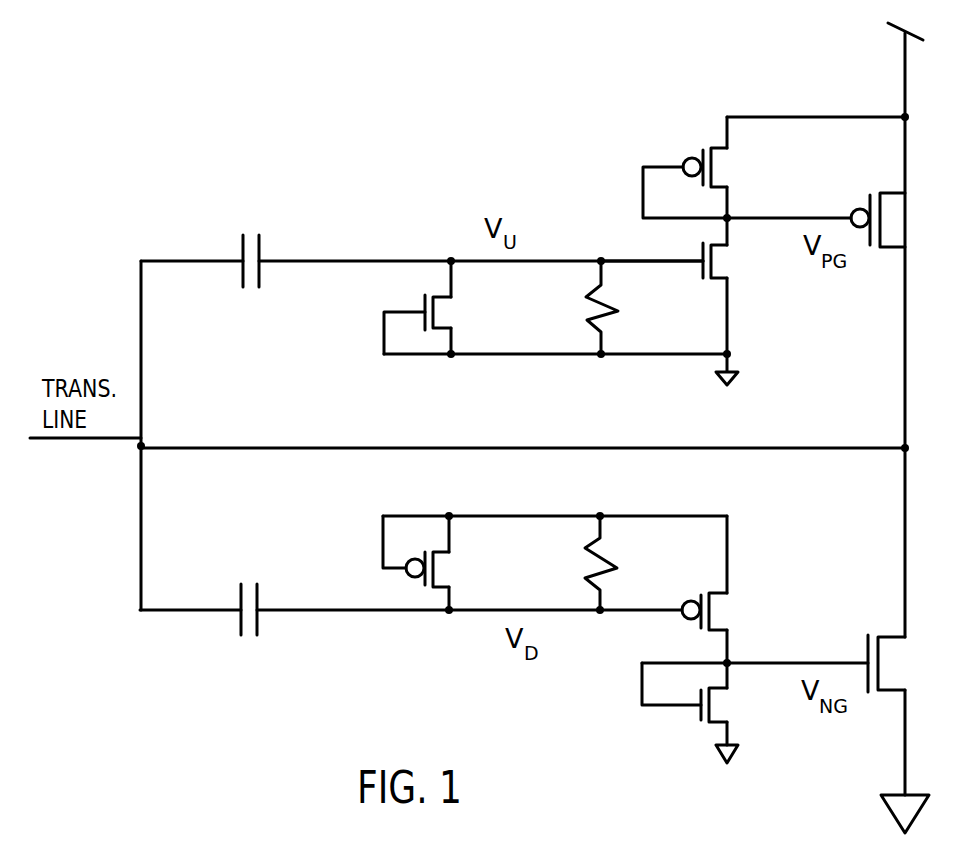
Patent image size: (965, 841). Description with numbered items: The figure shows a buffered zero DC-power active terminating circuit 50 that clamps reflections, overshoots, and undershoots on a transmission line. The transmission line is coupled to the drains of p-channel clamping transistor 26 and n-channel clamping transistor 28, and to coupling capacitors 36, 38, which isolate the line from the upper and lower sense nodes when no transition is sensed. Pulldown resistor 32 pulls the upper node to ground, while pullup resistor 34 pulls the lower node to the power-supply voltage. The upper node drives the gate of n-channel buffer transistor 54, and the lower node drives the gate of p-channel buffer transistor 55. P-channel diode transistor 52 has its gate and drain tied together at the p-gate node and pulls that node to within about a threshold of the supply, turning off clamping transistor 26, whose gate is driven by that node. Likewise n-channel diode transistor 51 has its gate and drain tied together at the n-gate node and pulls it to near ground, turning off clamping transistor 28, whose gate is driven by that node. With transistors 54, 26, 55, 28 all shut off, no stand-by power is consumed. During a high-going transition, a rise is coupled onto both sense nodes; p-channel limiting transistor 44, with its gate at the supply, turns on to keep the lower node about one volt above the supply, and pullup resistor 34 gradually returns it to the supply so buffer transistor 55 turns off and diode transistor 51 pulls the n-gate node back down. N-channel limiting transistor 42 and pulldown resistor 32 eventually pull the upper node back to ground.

The p-channel clamping transistor 26 is at (897, 218).
The n-channel clamping transistor 28 is at (892, 660).
The pulldown resistor 32 is at (578, 297).
The pullup resistor 34 is at (577, 549).
The coupling capacitor 36 is at (252, 288).
The coupling capacitor 38 is at (249, 637).
The n-channel limiting transistor 42 is at (450, 314).
The p-channel limiting transistor 44 is at (448, 570).
The active terminating circuit 50 is at (834, 400).
The n-channel diode transistor 51 is at (717, 707).
The p-channel diode transistor 52 is at (716, 170).
The n-channel buffer transistor 54 is at (716, 266).
The p-channel buffer transistor 55 is at (717, 612).